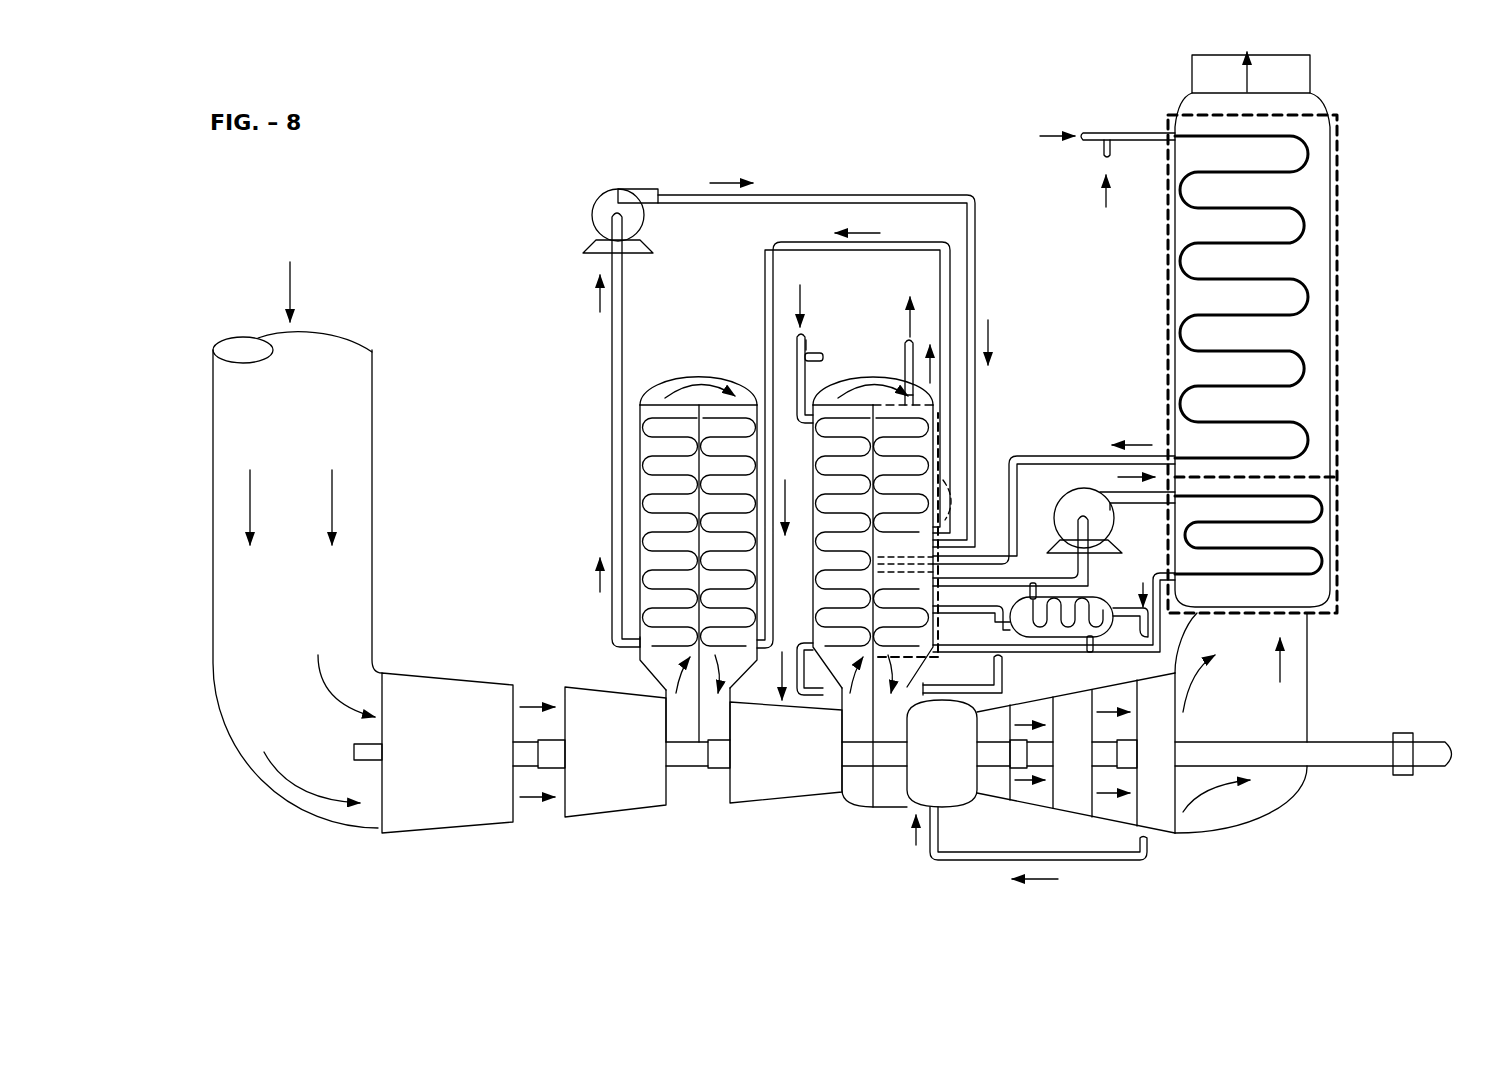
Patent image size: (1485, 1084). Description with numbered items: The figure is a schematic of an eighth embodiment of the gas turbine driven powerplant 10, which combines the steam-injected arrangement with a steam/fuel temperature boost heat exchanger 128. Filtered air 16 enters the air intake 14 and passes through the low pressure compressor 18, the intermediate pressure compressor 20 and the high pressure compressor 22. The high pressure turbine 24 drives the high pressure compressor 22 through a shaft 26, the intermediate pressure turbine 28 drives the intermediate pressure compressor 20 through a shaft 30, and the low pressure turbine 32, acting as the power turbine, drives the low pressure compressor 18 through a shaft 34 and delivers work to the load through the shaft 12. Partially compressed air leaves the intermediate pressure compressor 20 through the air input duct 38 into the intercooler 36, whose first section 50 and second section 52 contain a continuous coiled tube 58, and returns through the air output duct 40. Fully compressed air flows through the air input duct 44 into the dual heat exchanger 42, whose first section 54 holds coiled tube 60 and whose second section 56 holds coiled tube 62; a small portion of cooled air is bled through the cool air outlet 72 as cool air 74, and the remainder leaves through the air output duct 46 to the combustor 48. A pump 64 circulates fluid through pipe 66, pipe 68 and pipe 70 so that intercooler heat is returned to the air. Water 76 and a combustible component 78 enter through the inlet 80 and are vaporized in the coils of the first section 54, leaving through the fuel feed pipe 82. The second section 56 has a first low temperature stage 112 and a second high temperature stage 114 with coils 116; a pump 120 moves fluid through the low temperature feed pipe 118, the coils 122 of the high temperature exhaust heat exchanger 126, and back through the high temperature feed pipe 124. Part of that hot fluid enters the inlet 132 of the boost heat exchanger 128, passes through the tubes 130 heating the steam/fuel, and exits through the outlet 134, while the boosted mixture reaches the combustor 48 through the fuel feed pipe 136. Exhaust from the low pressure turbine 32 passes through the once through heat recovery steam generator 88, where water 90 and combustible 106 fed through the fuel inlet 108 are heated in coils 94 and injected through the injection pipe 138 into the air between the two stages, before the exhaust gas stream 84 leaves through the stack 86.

The gas turbine driven powerplant 10 is at (515, 126).
The shaft 12 is at (1320, 742).
The air intake 14 is at (372, 415).
The filtered air 16 is at (290, 274).
The low pressure compressor 18 is at (448, 825).
The intermediate pressure compressor 20 is at (620, 817).
The high pressure compressor 22 is at (770, 800).
The high pressure turbine 24 is at (990, 793).
The shaft 26 is at (727, 770).
The intermediate pressure turbine 28 is at (1070, 808).
The shaft 30 is at (530, 768).
The low pressure turbine 32 is at (1160, 828).
The shaft 34 is at (352, 750).
The intercooler 36 is at (725, 380).
The air input duct 38 is at (672, 735).
The air output duct 40 is at (732, 735).
The dual heat exchanger 42 is at (914, 393).
The air input duct 44 is at (842, 750).
The air output duct 46 is at (890, 726).
The combustor 48 is at (913, 795).
The first section 50 is at (650, 538).
The second section 52 is at (693, 500).
The first section 54 is at (833, 553).
The second section 56 is at (925, 437).
The coiled tube 58 is at (645, 437).
The coiled tube 60 is at (815, 462).
The coiled tube 62 is at (950, 492).
The pump 64 is at (592, 215).
The pipe 66 is at (612, 343).
The pipe 68 is at (968, 190).
The pipe 70 is at (767, 280).
The cool air outlet 72 is at (970, 330).
The cool air 74 is at (913, 334).
The water 76 is at (800, 340).
The combustible component 78 is at (826, 357).
The inlet 80 is at (806, 340).
The fuel feed pipe 82 is at (930, 697).
The exhaust gas stream 84 is at (1247, 55).
The stack 86 is at (1305, 72).
The once through heat recovery steam generator 88 is at (1345, 235).
The water 90 is at (1033, 133).
The coils 94 is at (1312, 150).
The combustible 106 is at (1106, 212).
The fuel inlet 108 is at (1150, 130).
The first low temperature stage 112 is at (950, 450).
The second high temperature stage 114 is at (945, 609).
The coils 116 is at (940, 647).
The low temperature feed pipe 118 is at (990, 578).
The pump 120 is at (1097, 492).
The coils 122 is at (1322, 495).
The high temperature feed pipe 124 is at (991, 683).
The high temperature exhaust heat exchanger 126 is at (1343, 555).
The steam/fuel temperature boost heat exchanger 128 is at (1143, 582).
The tubes 130 is at (1092, 640).
The inlet 132 is at (1085, 642).
The outlet 134 is at (1140, 610).
The fuel feed pipe 136 is at (1085, 862).
The injection pipe 138 is at (985, 557).